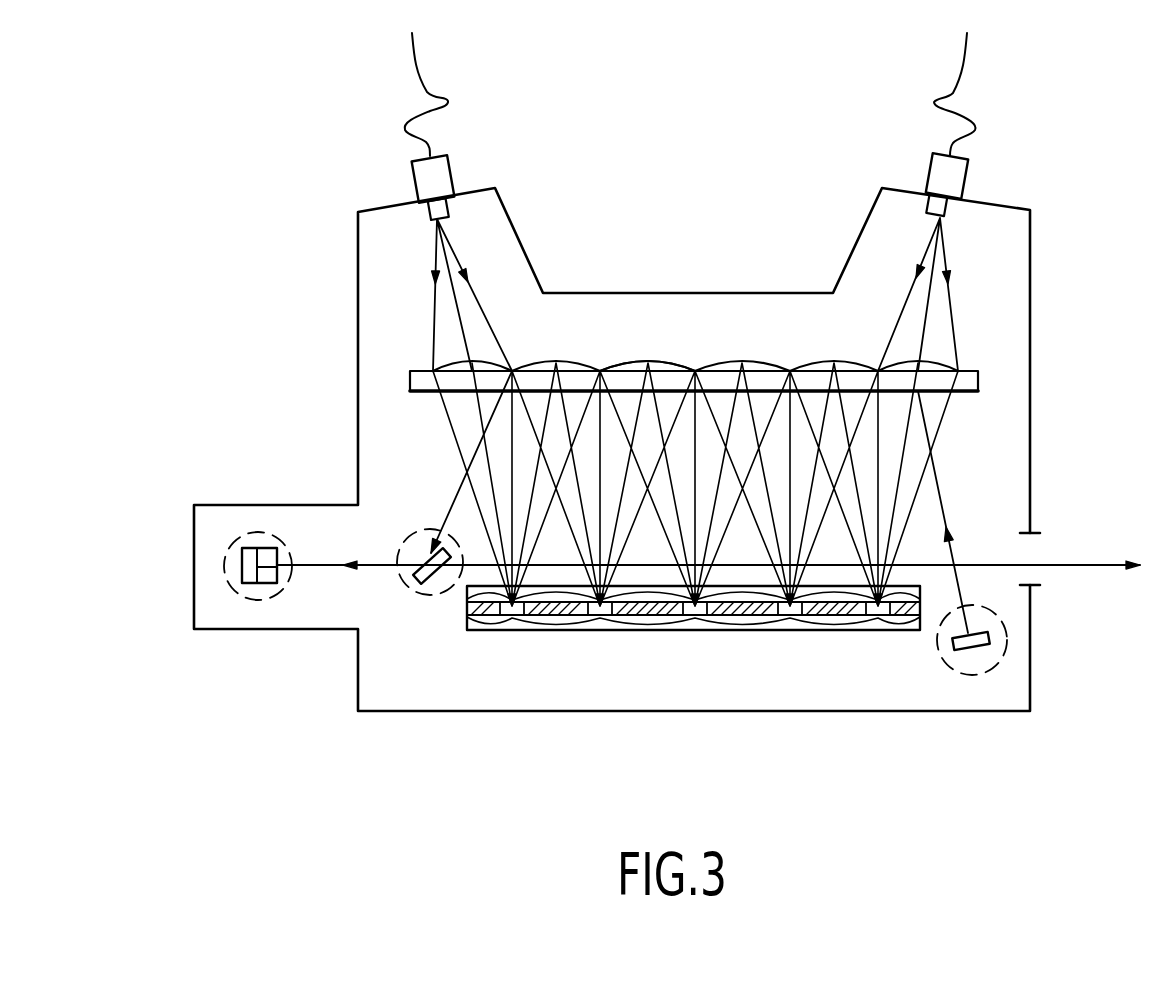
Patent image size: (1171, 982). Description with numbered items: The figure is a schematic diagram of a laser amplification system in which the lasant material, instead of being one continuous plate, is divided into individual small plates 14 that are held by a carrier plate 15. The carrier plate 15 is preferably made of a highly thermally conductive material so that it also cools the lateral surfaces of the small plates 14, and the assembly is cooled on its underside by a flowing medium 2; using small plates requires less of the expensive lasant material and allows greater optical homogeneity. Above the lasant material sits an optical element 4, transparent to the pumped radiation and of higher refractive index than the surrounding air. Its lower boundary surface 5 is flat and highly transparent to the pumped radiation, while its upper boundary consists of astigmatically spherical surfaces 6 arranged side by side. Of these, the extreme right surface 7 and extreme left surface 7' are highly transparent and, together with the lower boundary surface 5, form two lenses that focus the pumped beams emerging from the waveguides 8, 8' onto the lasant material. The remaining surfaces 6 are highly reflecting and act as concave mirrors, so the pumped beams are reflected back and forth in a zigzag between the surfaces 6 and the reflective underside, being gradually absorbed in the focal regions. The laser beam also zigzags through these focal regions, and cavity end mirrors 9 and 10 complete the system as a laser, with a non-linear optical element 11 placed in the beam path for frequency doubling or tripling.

The flowing medium 2 is at (693, 677).
The optical element 4 is at (652, 368).
The lower boundary surface 5 is at (738, 392).
The astigmatically spherical surfaces 6 is at (826, 365).
The extreme right surface 7 is at (908, 294).
The extreme left surface 7' is at (503, 295).
The waveguide 8 is at (909, 126).
The waveguide 8' is at (460, 127).
The cavity end mirror 9 is at (428, 588).
The cavity end mirror 10 is at (966, 650).
The non-linear optical element 11 is at (255, 583).
The small plates 14 is at (600, 630).
The carrier plate 15 is at (735, 630).